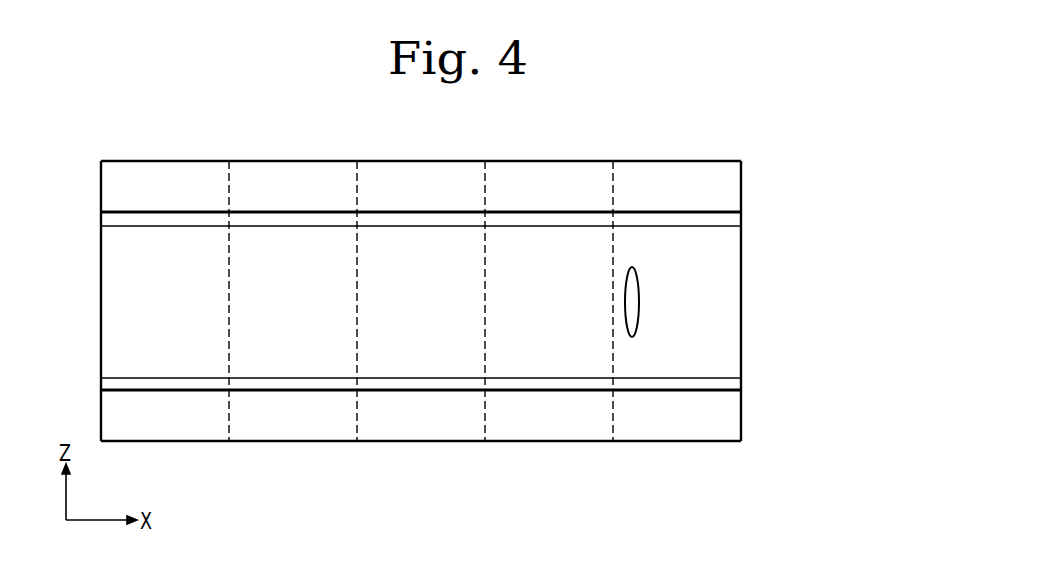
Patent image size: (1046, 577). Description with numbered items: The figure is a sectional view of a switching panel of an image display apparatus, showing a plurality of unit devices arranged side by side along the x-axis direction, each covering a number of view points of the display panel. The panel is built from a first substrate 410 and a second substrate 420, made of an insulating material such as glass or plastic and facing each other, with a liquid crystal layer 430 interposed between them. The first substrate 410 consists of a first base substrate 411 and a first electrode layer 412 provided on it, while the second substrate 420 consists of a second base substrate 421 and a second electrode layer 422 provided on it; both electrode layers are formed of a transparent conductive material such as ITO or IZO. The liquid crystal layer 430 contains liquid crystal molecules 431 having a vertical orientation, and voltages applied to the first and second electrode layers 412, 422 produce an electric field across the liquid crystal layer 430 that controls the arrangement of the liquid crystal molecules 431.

The first substrate 410 is at (812, 379).
The first base substrate 411 is at (727, 416).
The first electrode layer 412 is at (727, 383).
The second substrate 420 is at (812, 178).
The second base substrate 421 is at (727, 188).
The second electrode layer 422 is at (727, 217).
The liquid crystal layer 430 is at (727, 322).
The liquid crystal molecules 431 is at (639, 277).